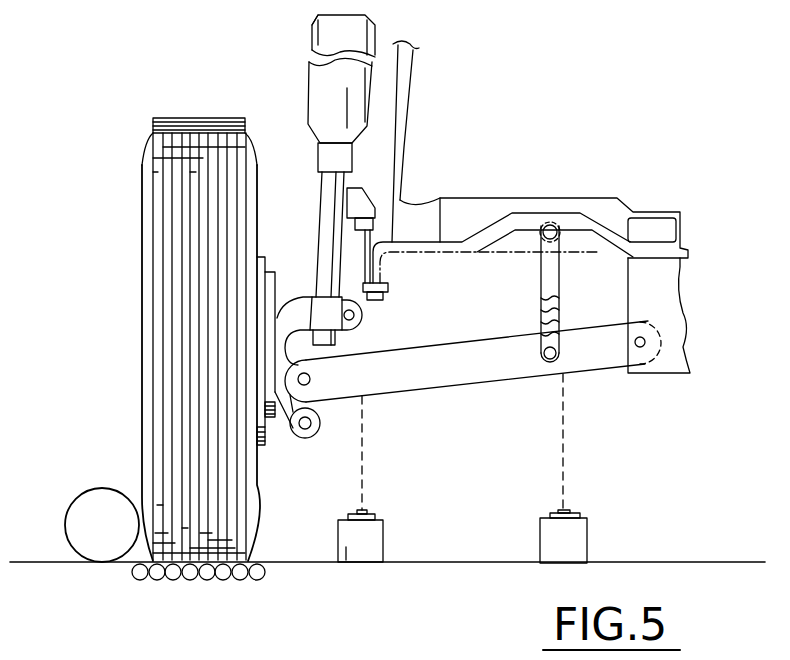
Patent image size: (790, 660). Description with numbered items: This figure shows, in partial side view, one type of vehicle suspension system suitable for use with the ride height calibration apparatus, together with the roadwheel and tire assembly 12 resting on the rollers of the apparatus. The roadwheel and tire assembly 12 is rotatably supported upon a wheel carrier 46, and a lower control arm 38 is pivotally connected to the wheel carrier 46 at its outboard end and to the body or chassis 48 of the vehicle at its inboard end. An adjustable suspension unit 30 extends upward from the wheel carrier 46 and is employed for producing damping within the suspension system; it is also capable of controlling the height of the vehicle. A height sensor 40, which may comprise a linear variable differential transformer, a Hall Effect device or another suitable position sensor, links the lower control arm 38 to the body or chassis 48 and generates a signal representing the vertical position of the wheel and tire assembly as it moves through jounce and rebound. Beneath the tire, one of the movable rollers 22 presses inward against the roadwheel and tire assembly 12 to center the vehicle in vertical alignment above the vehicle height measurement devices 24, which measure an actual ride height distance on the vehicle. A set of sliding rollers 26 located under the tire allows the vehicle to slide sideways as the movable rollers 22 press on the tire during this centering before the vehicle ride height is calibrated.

The apparatus 12 is at (147, 503).
The movable rollers 22 is at (75, 503).
The sliding rollers 26 is at (264, 585).
The adjustable suspension unit 30 is at (318, 85).
The wheel carrier 46 is at (305, 303).
The lower control arm 38 is at (457, 378).
The height sensor 40 is at (538, 308).
The body or chassis 48 is at (672, 305).
The vehicle height measurement devices 24 is at (550, 533).